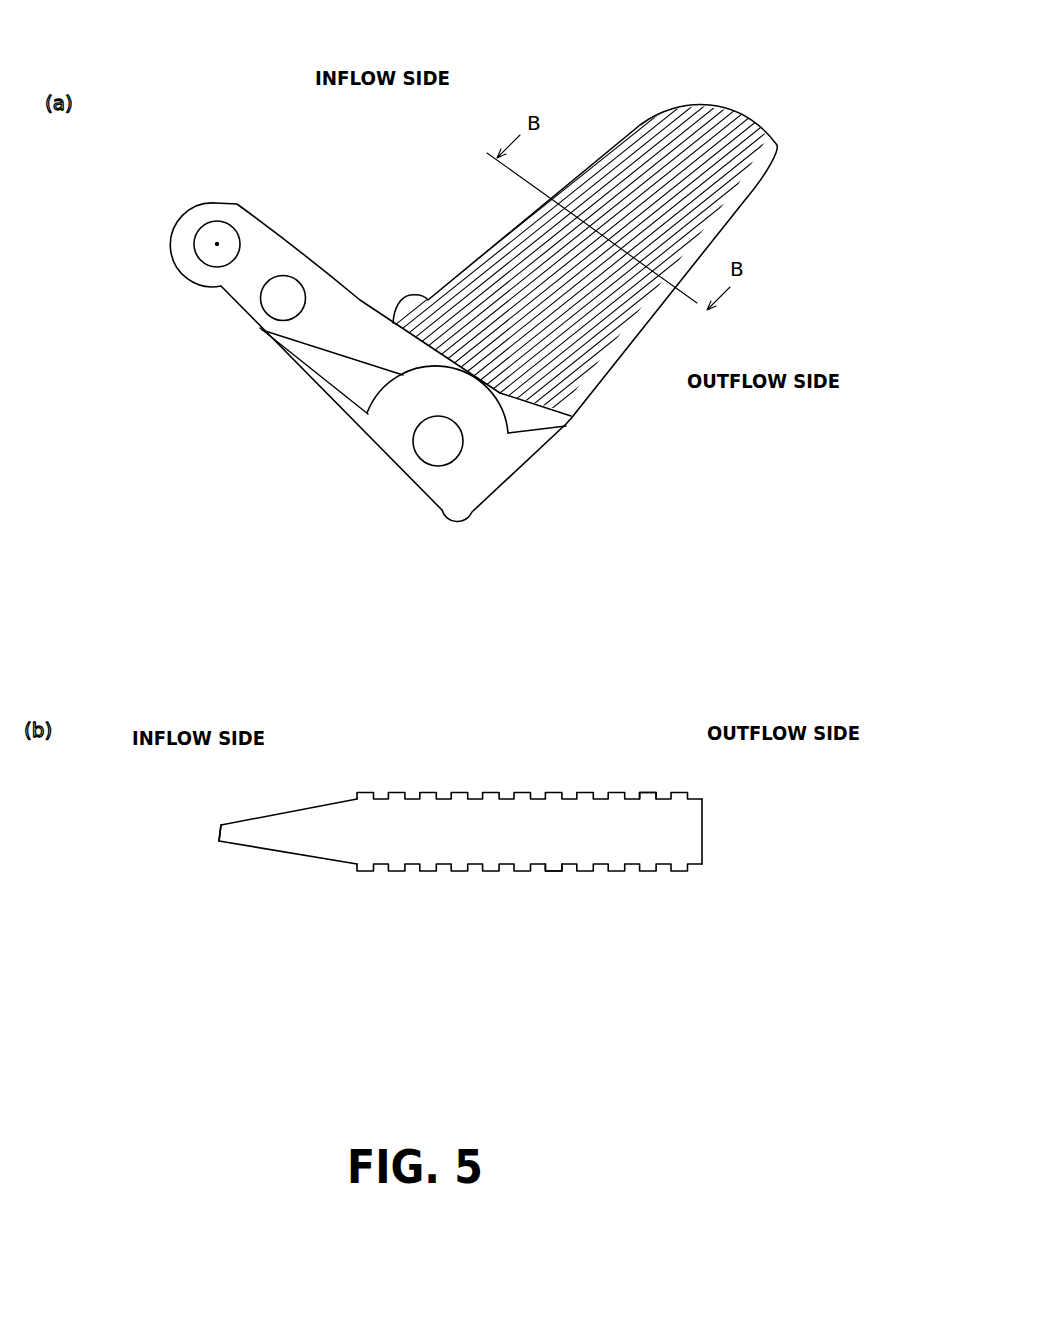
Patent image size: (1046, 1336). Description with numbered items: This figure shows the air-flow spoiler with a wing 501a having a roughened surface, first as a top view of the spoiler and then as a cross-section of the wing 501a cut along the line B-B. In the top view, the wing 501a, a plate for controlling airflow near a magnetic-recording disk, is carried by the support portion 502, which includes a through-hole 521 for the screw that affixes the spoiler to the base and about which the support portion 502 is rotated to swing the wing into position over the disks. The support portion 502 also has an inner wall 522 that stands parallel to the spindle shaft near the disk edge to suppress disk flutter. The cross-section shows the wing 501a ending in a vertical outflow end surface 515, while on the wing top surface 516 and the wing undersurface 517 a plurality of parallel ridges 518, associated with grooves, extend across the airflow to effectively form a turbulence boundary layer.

The wing 501a is at (635, 122).
The support portion 502 is at (380, 350).
The outflow end surface 515 is at (219, 839).
The wing top surface 516 is at (459, 766).
The wing undersurface 517 is at (482, 898).
The ridges 518 is at (639, 792).
The through-hole 521 is at (443, 437).
The inner wall 522 is at (297, 247).